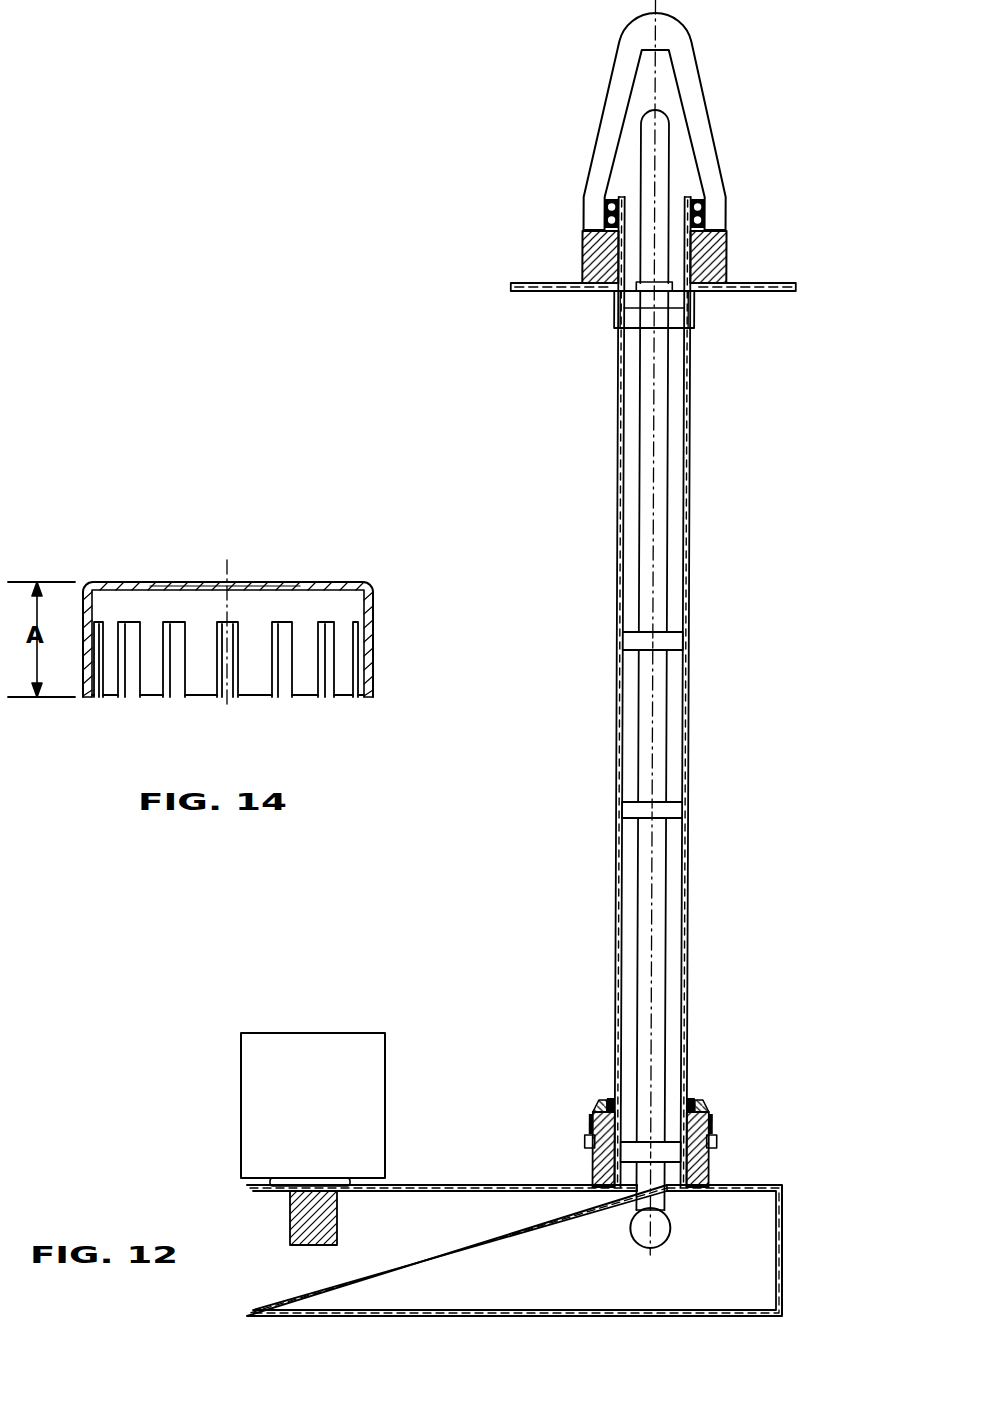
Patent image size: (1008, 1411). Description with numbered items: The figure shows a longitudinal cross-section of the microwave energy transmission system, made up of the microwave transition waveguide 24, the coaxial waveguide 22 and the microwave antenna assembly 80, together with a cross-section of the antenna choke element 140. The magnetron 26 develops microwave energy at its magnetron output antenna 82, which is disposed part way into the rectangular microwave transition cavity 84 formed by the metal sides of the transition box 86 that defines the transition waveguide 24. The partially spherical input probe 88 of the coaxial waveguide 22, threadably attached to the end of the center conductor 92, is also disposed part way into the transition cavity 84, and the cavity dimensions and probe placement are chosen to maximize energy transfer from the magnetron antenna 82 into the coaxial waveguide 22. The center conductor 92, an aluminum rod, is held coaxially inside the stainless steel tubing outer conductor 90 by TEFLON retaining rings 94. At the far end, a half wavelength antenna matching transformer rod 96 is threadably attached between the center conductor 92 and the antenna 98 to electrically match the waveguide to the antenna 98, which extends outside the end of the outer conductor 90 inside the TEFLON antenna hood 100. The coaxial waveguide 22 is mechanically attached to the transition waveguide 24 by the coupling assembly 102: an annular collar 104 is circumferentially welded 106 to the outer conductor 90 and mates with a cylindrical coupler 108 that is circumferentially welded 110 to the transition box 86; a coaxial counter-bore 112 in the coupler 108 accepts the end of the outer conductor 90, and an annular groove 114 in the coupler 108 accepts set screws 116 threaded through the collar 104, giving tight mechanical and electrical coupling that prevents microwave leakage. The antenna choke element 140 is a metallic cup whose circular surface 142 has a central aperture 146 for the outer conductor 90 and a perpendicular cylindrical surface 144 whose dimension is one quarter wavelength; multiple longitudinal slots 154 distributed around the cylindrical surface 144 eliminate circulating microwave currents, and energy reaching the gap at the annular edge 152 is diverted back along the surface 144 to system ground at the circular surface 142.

In FIG. 12, the coaxial waveguide 22 is at (700, 720).
In FIG. 12, the microwave transition waveguide 24 is at (784, 1222).
In FIG. 12, the magnetron 26 is at (255, 1061).
In FIG. 12, the microwave antenna assembly 80 is at (540, 180).
In FIG. 12, the magnetron output antenna 82 is at (337, 1220).
In FIG. 12, the rectangular microwave transition cavity 84 is at (432, 1293).
In FIG. 12, the transition box 86 is at (417, 1185).
In FIG. 12, the coaxial waveguide input probe 88 is at (637, 1236).
In FIG. 12, the outer conductor 90 is at (691, 983).
In FIG. 12, the coaxial waveguide center conductor 92 is at (653, 920).
In FIG. 12, the retaining rings 94 is at (663, 303).
In FIG. 12, the antenna matching transformer rod 96 is at (655, 245).
In FIG. 12, the antenna 98 is at (650, 124).
In FIG. 12, the antenna hood 100 is at (645, 35).
In FIG. 12, the coupling assembly 102 is at (800, 1122).
In FIG. 12, the annular collar 104 is at (600, 1113).
In FIG. 12, the circumferential weld 106 is at (615, 1108).
In FIG. 12, the cylindrical coupler 108 is at (715, 1185).
In FIG. 12, the circumferential weld 110 is at (594, 1185).
In FIG. 12, the coaxial counter-bore 112 is at (710, 1121).
In FIG. 12, the annular groove 114 is at (596, 1121).
In FIG. 12, the set screws 116 is at (588, 1140).
In FIG. 14, the antenna choke element 140 is at (376, 581).
In FIG. 14, the circular surface 142 is at (317, 582).
In FIG. 14, the cylindrical surface 144 is at (374, 632).
In FIG. 14, the central aperture 146 is at (248, 584).
In FIG. 14, the annular edge 152 is at (366, 692).
In FIG. 14, the slots 154 is at (325, 682).